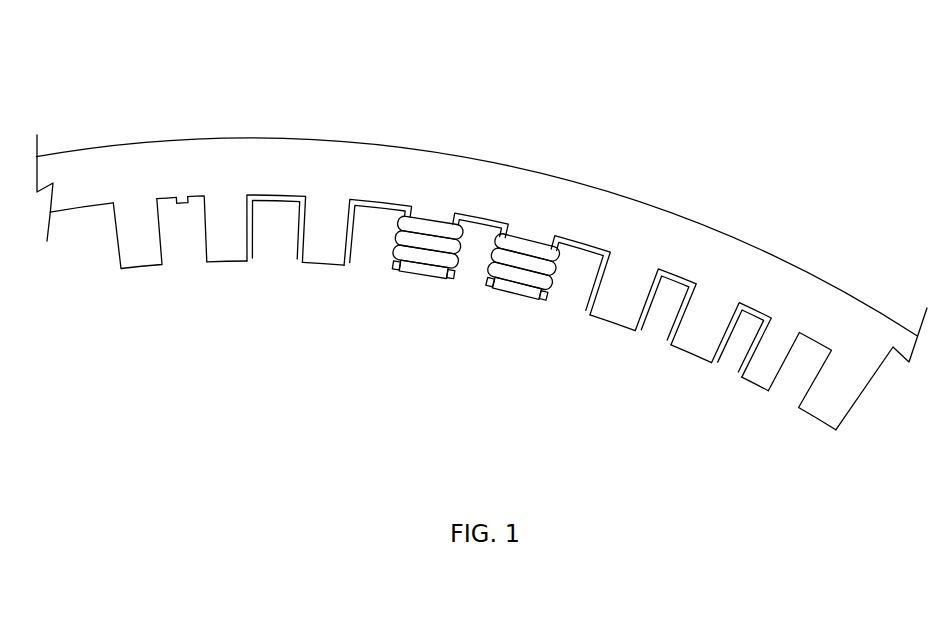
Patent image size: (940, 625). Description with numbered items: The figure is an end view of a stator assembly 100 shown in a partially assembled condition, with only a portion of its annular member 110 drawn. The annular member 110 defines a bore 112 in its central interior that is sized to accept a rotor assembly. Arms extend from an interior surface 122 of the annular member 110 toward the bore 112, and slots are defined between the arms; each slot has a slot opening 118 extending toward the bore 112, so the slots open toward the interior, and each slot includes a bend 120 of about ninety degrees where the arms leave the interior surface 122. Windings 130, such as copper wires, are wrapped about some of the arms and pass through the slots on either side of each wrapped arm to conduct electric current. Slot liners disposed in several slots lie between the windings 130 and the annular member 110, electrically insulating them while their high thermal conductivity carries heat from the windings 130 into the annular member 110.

The stator assembly 100 is at (780, 66).
The annular member 110 is at (410, 146).
The bore 112 is at (276, 465).
The slot opening 118 is at (183, 272).
The bend 120 is at (168, 262).
The interior surface 122 is at (182, 196).
The winding 130 is at (387, 259).